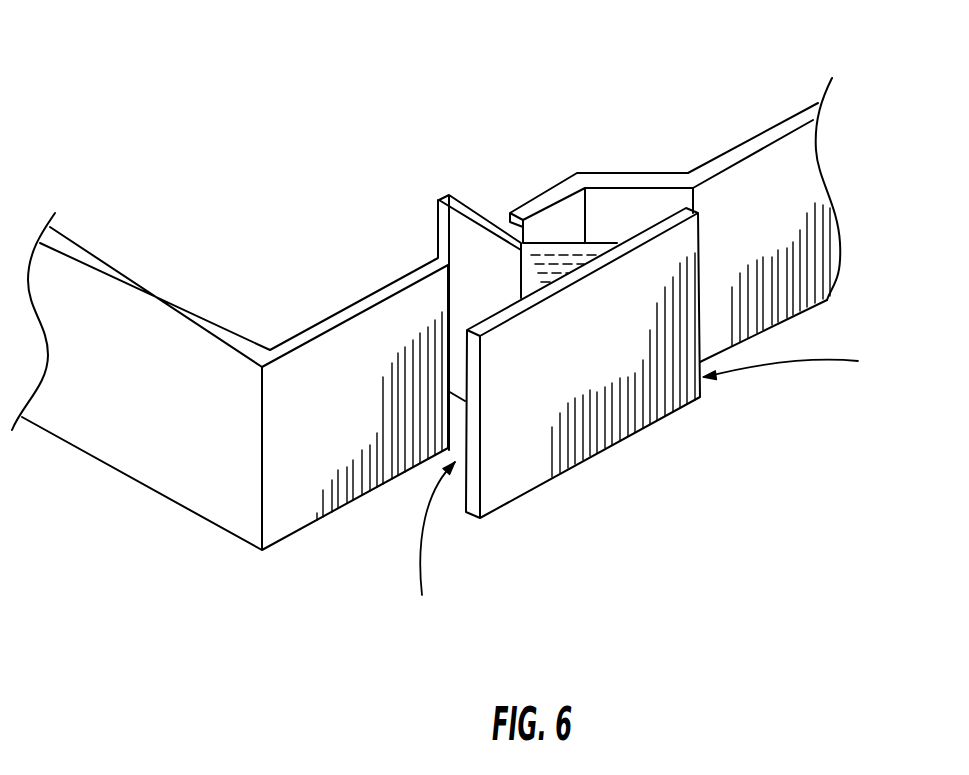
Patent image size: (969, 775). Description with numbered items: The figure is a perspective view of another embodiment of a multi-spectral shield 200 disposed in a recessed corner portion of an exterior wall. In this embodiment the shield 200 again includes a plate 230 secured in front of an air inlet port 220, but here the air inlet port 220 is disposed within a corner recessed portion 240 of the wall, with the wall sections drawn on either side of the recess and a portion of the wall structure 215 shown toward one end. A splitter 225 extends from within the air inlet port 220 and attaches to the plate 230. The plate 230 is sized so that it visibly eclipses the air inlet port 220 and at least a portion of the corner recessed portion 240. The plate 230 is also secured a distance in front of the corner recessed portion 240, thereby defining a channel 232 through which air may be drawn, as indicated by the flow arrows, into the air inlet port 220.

The multi-spectral shield 200 is at (235, 127).
The downstream channel section 215 is at (803, 312).
The air inlet port 220 is at (503, 203).
The splitter 225 is at (450, 193).
The plate 230 is at (603, 453).
The channel 232 is at (712, 397).
The corner recessed portion 240 is at (345, 313).